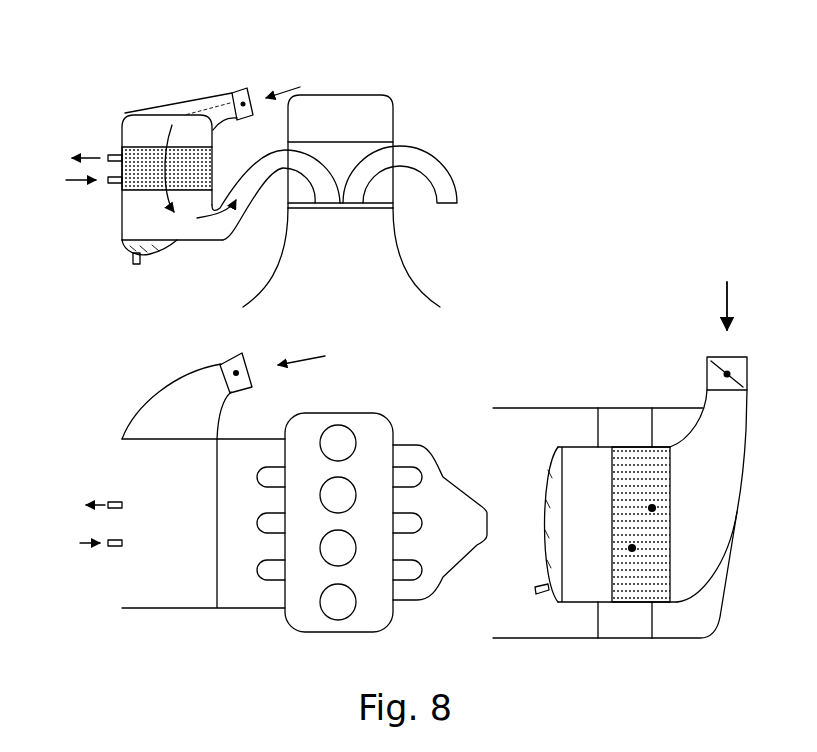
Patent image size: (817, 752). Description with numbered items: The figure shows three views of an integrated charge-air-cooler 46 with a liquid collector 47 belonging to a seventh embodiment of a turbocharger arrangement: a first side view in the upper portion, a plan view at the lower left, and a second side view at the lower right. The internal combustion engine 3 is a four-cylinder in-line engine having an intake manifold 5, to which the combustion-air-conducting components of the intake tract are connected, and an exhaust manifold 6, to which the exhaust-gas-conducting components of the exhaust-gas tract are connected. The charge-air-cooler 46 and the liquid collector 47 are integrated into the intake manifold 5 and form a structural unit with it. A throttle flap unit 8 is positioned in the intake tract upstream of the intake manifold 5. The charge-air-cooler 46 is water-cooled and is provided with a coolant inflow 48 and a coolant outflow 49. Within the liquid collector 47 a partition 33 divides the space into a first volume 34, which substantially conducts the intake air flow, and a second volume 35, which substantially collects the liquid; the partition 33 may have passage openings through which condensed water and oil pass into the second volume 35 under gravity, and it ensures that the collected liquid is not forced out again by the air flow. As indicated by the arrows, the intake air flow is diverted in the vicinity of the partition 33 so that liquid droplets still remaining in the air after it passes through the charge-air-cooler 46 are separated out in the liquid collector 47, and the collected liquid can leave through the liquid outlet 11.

The internal combustion engine 3 is at (348, 262).
The intake manifold 5 is at (276, 183).
The exhaust manifold 6 is at (446, 208).
The throttle flap unit 8 is at (240, 92).
The liquid outlet 11 is at (132, 262).
The partition 33 is at (165, 249).
The first volume 34 is at (200, 222).
The second volume 35 is at (148, 257).
The charge-air-cooler 46 is at (121, 148).
The liquid collector 47 is at (128, 212).
The coolant inflow 48 is at (683, 617).
The coolant outflow 49 is at (698, 463).